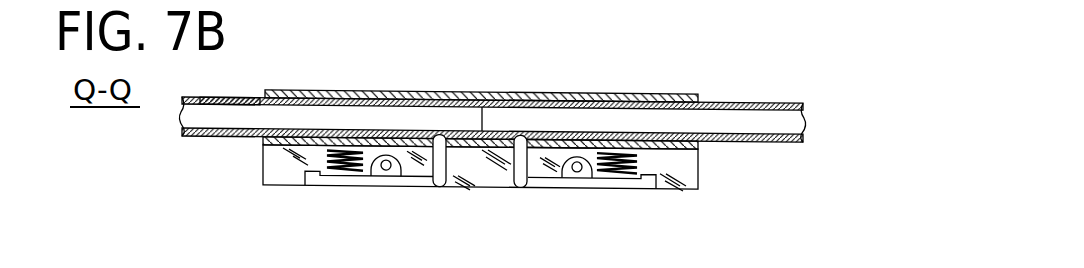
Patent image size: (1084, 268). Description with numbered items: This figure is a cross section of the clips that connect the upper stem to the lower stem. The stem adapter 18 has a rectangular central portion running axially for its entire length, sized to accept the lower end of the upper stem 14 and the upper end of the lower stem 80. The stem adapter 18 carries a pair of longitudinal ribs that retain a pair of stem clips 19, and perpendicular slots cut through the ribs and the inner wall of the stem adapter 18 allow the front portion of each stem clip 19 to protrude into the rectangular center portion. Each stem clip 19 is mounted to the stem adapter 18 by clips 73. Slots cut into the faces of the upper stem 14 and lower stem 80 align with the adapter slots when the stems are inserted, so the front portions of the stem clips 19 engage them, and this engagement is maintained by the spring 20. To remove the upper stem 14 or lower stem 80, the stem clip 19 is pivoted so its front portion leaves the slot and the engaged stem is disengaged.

The upper stem 14 is at (773, 103).
The stem adapter 18 is at (450, 90).
The lower stem 80 is at (236, 98).
The spring 20 is at (300, 157).
The clips 73 is at (386, 173).
The stem clip 19 is at (522, 189).